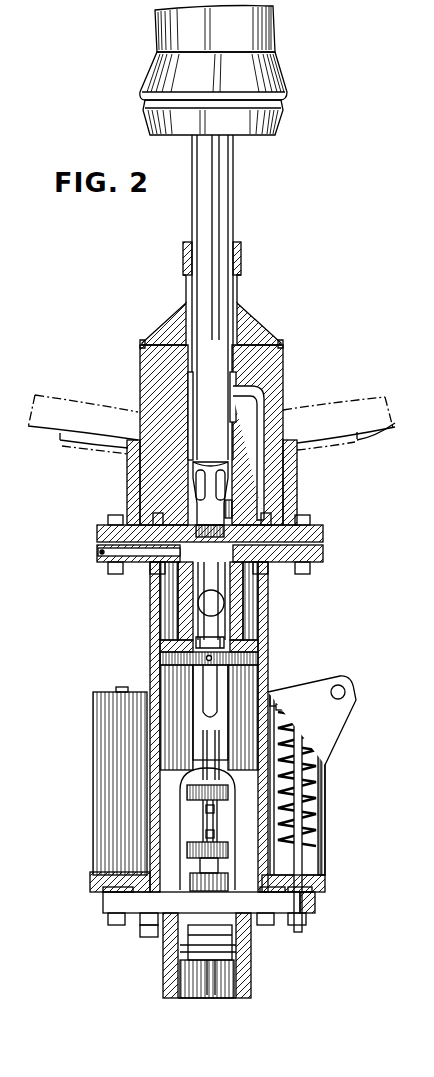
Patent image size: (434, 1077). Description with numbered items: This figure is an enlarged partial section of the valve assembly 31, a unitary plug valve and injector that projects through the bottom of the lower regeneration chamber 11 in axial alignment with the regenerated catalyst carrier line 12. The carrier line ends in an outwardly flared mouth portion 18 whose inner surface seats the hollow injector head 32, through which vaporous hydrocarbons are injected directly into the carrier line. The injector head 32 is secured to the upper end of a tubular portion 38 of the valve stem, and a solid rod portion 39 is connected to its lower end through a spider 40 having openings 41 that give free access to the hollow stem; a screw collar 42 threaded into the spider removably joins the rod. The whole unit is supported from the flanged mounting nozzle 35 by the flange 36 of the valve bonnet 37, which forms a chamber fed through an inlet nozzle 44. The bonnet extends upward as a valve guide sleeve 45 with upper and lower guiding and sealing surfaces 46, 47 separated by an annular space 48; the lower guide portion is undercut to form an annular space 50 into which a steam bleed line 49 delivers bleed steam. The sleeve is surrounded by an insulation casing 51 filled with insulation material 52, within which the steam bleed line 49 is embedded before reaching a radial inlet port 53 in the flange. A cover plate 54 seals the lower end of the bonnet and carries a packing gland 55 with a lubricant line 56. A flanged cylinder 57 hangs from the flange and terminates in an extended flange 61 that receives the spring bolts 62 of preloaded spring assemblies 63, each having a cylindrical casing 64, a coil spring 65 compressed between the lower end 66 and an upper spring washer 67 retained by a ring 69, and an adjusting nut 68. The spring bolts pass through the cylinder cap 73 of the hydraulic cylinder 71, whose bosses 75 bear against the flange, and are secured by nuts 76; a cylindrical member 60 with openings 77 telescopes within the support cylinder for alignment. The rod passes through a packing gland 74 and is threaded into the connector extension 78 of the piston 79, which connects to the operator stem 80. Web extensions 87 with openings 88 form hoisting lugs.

The lower regeneration chamber 11 is at (360, 437).
The regenerated catalyst carrier line 12 is at (170, 27).
The outwardly flared mouth portion 18 is at (157, 84).
The valve assembly 31 is at (268, 279).
The hollow injector head 32 is at (268, 128).
The flanged mounting nozzle 35 is at (297, 476).
The flange 36 is at (323, 556).
The valve bonnet 37 is at (244, 607).
The tubular portion 38 is at (222, 212).
The solid rod portion 39 is at (218, 629).
The spider 40 is at (204, 505).
The openings 41 is at (199, 479).
The screw collar 42 is at (233, 525).
The inlet nozzle 44 is at (196, 603).
The valve guide sleeve 45 is at (186, 318).
The upper guiding and sealing surface 46 is at (183, 262).
The lower guiding and sealing surface 47 is at (190, 430).
The annular space 48 is at (233, 318).
The steam bleed line 49 is at (262, 410).
The annular space 50 is at (237, 380).
The insulation casing 51 is at (140, 363).
The insulation material 52 is at (158, 346).
The radial inlet port 53 is at (103, 556).
The cover plate 54 is at (175, 658).
The packing gland 55 is at (190, 742).
The lubricant line 56 is at (211, 689).
The flanged cylinder 57 is at (152, 631).
The cylindrical member 60 is at (168, 825).
The extended flange 61 is at (96, 882).
The spring bolt 62 is at (118, 689).
The preloaded spring assembly 63 is at (92, 713).
The cylindrical casing 64 is at (323, 804).
The coil spring 65 is at (312, 851).
The lower end of casing 66 is at (324, 880).
The upper spring washer 67 is at (323, 710).
The nut 68 is at (299, 696).
The ring 69 is at (279, 695).
The hydraulic cylinder 71 is at (253, 987).
The cylinder cap 73 is at (113, 915).
The packing gland 74 is at (212, 883).
The bosses 75 is at (103, 897).
The nuts 76 is at (132, 935).
The openings 77 is at (186, 842).
The connector extension 78 is at (190, 938).
The piston 79 is at (180, 958).
The stem 80 is at (212, 985).
The extensions 87 is at (331, 720).
The openings 88 is at (348, 690).